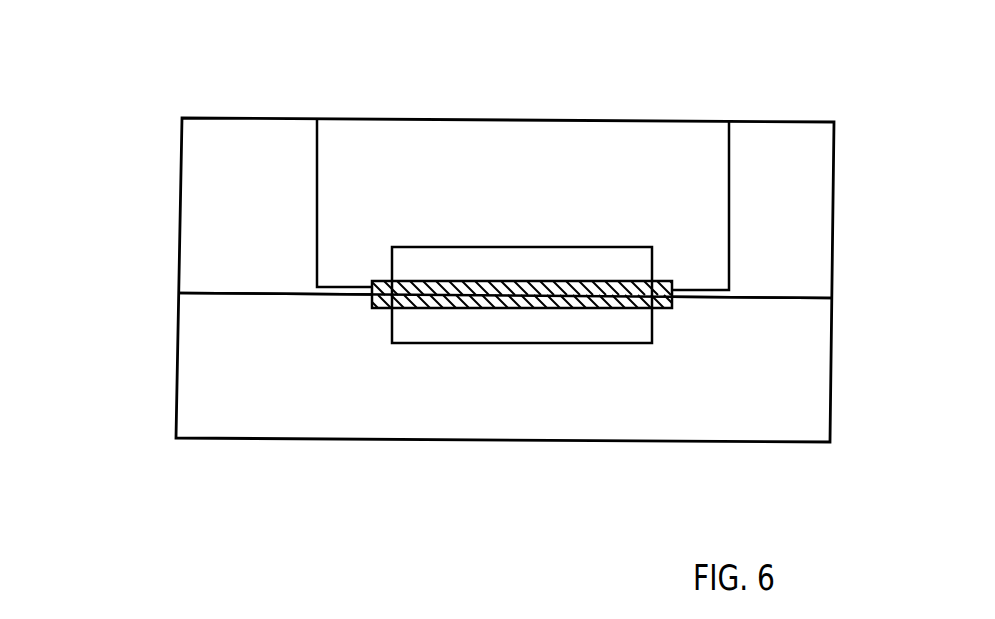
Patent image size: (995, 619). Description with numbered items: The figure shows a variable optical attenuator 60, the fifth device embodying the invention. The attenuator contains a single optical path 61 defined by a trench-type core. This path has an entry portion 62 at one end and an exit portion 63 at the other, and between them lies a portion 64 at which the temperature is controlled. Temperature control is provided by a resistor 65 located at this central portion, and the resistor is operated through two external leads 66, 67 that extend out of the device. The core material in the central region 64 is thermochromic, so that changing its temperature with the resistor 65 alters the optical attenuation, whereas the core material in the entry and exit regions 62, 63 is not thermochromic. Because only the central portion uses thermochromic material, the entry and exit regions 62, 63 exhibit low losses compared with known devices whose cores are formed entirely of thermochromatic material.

The variable optical attenuator 60 is at (842, 116).
The optical path 61 is at (177, 292).
The entry portion 62 is at (227, 300).
The exit portion 63 is at (745, 302).
The temperature-controlled portion 64 is at (453, 348).
The resistor 65 is at (517, 274).
The external lead 66 is at (317, 118).
The external lead 67 is at (729, 122).